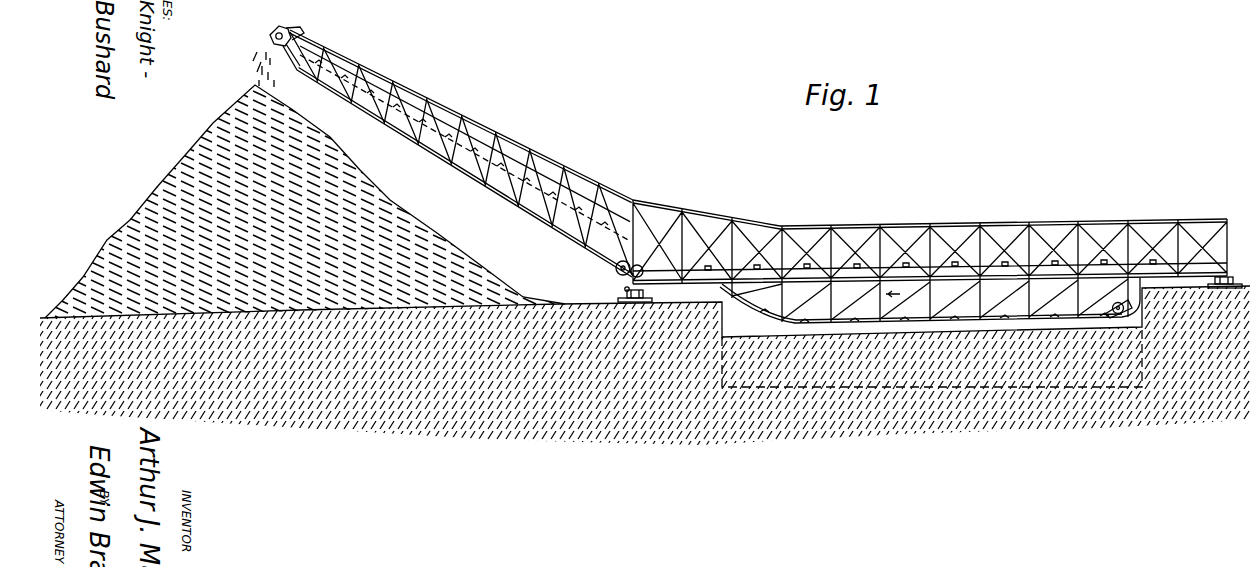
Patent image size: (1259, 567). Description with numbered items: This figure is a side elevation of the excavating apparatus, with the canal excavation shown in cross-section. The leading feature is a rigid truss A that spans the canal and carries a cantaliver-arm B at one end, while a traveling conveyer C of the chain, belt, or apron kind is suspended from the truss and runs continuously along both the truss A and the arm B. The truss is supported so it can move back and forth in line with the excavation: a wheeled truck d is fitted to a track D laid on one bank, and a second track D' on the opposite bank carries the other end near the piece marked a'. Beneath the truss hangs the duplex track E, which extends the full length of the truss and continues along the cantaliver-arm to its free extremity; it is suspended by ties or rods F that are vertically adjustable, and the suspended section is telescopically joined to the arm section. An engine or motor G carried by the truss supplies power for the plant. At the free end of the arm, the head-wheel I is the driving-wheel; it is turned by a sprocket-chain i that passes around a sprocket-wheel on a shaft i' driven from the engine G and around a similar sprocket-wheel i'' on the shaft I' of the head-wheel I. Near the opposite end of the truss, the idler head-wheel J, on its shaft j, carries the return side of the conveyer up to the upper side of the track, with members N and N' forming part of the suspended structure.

The truss A is at (930, 242).
The cantaliver-arm B is at (458, 153).
The traveling conveyer C is at (930, 303).
The track D is at (643, 294).
The track D' is at (1212, 282).
The duplex track E is at (645, 365).
The ties or rods F is at (893, 299).
The engine or motor G is at (616, 276).
The head-wheel I is at (280, 25).
The shaft of head-wheel I' is at (273, 31).
The sprocket-chain i is at (465, 148).
The shaft i' is at (623, 261).
The sprocket-wheel i'' is at (282, 22).
The head-wheel J is at (1110, 301).
The shaft of idler head-wheel j is at (1110, 305).
The truss diagonal members N is at (831, 299).
The truss diagonal members N' is at (1029, 297).
The end support block a' is at (1232, 274).
The wheeled truck d is at (626, 294).